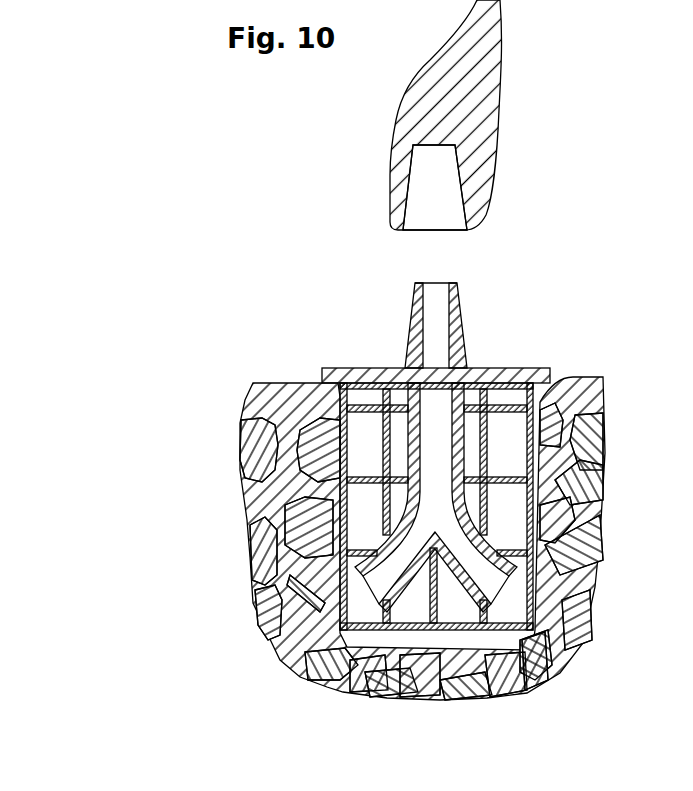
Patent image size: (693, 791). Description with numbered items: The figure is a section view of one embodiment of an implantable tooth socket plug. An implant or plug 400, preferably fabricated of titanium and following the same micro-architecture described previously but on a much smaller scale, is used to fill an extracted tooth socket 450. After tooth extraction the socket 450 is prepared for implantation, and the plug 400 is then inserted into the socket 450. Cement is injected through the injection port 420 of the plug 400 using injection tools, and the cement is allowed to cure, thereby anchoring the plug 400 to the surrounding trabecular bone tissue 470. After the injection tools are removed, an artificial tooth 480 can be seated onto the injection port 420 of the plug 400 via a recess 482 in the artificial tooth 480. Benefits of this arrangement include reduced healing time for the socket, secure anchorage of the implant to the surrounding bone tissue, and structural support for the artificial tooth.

The plug 400 is at (323, 338).
The injection port 420 is at (455, 282).
The extracted tooth socket 450 is at (515, 467).
The trabecular bone tissue 470 is at (267, 402).
The artificial tooth 480 is at (503, 105).
The recess 482 is at (433, 185).